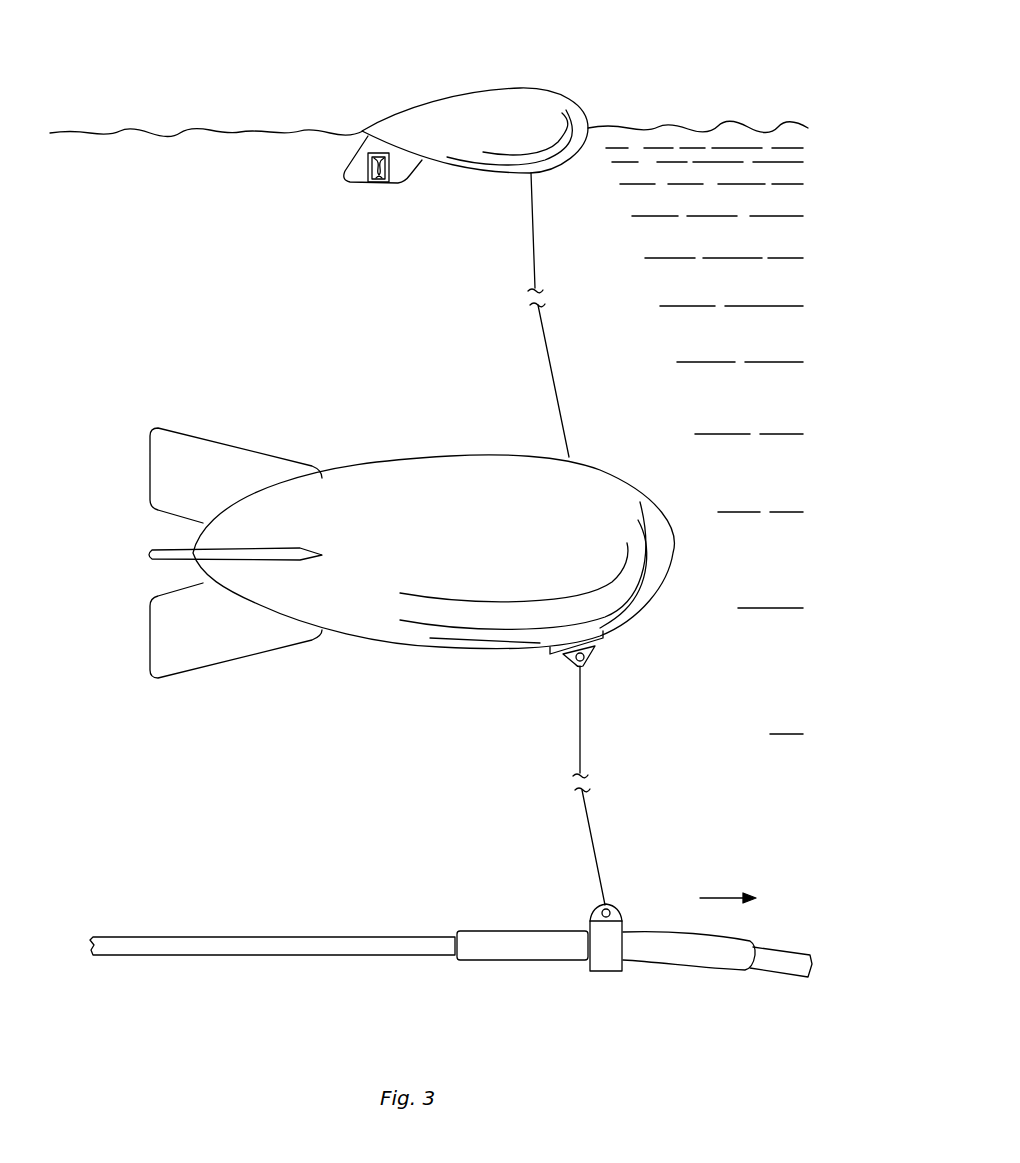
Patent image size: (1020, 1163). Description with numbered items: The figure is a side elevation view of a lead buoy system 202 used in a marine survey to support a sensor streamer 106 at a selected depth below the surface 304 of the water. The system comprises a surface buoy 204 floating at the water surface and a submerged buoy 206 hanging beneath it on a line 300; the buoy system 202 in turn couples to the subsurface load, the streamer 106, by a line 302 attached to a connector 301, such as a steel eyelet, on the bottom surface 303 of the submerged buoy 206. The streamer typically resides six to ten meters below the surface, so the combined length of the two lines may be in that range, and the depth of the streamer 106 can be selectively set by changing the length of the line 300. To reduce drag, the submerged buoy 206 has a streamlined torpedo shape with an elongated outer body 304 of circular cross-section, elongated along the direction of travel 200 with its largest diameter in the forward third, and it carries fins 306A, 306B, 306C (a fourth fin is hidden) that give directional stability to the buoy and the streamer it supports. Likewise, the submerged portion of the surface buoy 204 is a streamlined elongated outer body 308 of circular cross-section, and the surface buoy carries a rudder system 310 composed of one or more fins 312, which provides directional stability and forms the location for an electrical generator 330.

The streamer 106 is at (306, 933).
The direction of travel 200 is at (718, 897).
The lead buoy system 202 is at (637, 35).
The surface buoy 204 is at (492, 88).
The submerged buoy 206 is at (413, 460).
The line 300 is at (552, 372).
The connector 301 is at (586, 668).
The line 302 is at (590, 832).
The bottom surface 303 is at (415, 648).
The surface of the water 304 is at (197, 132).
The fin 306A is at (150, 470).
The fin 306B is at (148, 556).
The fin 306C is at (150, 637).
The elongated outer body 308 is at (511, 139).
The rudder system 310 is at (334, 170).
The fin 312 is at (358, 184).
The electrical generator 330 is at (381, 184).